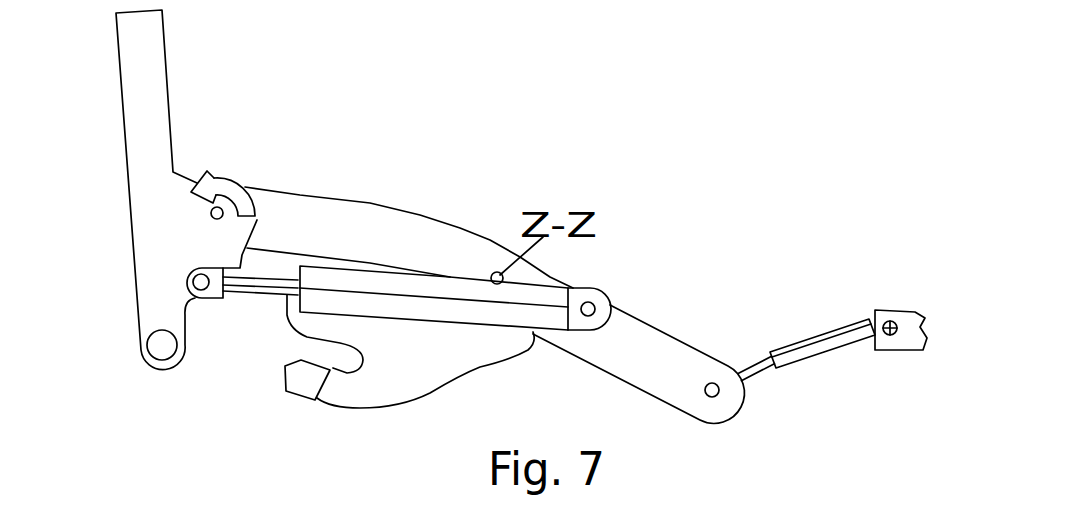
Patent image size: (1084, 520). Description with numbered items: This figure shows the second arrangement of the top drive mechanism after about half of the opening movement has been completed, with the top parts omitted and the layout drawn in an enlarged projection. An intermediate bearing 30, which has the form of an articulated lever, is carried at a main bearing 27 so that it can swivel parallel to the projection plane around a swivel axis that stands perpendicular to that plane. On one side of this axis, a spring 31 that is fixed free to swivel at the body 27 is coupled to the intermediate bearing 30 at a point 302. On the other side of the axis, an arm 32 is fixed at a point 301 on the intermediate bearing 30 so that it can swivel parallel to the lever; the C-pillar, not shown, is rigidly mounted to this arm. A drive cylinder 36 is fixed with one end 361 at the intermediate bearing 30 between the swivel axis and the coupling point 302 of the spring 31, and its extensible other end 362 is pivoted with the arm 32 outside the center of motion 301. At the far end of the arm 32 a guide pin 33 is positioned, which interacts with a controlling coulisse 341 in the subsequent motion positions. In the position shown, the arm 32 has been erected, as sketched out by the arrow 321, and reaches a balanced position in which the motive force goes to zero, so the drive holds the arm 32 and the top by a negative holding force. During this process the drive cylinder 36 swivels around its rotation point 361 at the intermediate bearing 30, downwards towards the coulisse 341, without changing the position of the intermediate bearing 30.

The main bearing 27 is at (440, 366).
The intermediate bearing 30 is at (662, 337).
The spring 31 is at (808, 350).
The arm 32 is at (155, 67).
The guide pin 33 is at (162, 347).
The drive cylinder 36 is at (402, 285).
The rotation point of the arm 301 is at (210, 215).
The coupling point of the spring 302 is at (715, 393).
The arrow 321 is at (230, 188).
The controlling coulisse 341 is at (333, 368).
The end of the drive cylinder 361 is at (592, 306).
The extensible other end of the drive cylinder 362 is at (201, 288).